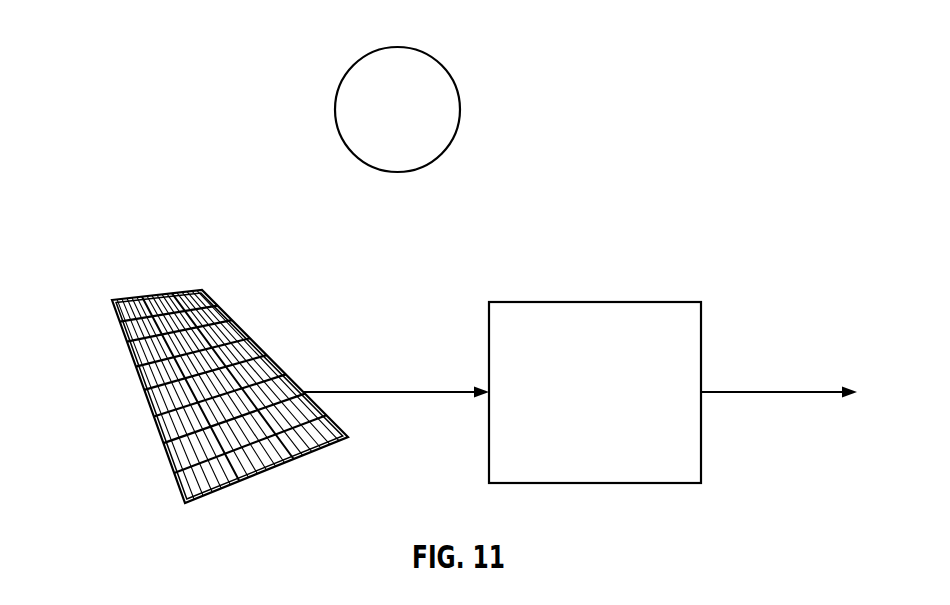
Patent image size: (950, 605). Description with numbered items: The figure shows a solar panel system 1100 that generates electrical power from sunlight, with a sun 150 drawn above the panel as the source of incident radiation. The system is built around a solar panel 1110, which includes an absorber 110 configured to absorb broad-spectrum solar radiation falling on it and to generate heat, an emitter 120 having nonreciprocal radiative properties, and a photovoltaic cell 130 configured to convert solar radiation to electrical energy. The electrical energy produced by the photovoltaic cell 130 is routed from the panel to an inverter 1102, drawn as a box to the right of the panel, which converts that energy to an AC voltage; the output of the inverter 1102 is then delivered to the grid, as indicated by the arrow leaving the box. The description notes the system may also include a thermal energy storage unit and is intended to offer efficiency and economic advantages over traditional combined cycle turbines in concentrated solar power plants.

The solar panel system 1100 is at (121, 33).
The sun 150 is at (460, 110).
The inverter 1102 is at (595, 302).
The absorber 110 is at (132, 341).
The solar panel 1110 is at (157, 292).
The emitter 120 is at (156, 403).
The photovoltaic cell 130 is at (180, 470).